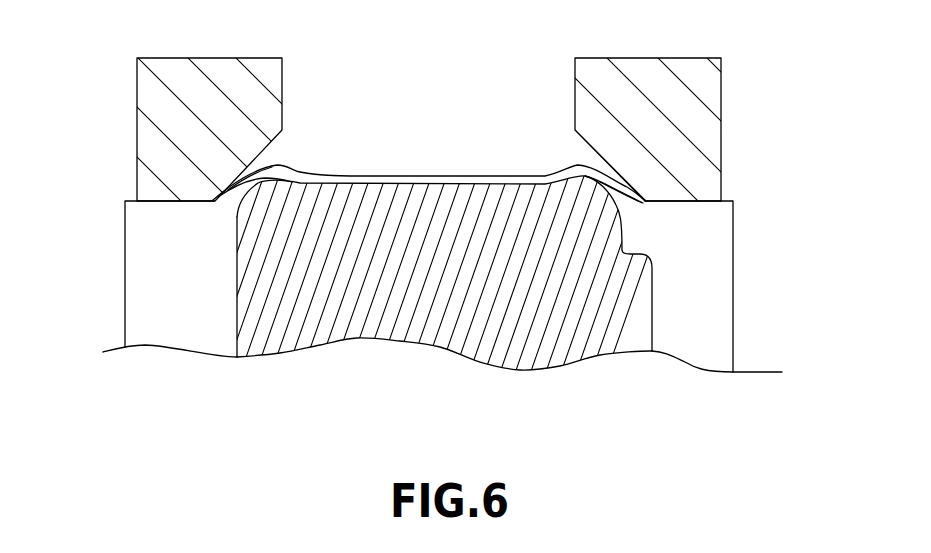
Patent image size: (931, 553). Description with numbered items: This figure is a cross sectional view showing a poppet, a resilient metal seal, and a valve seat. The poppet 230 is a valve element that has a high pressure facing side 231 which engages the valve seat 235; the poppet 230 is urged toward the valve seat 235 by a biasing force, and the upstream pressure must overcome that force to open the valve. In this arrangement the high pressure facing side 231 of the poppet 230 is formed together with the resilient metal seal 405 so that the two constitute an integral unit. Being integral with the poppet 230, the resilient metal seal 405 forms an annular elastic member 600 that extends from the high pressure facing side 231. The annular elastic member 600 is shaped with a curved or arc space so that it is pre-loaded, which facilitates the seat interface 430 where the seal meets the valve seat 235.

The poppet 230 is at (640, 326).
The high pressure facing side 231 is at (477, 176).
The valve seat 235 is at (252, 156).
The seat interface 430 is at (618, 172).
The annular elastic member 600 is at (240, 172).
The resilient metal seal 405 is at (628, 183).